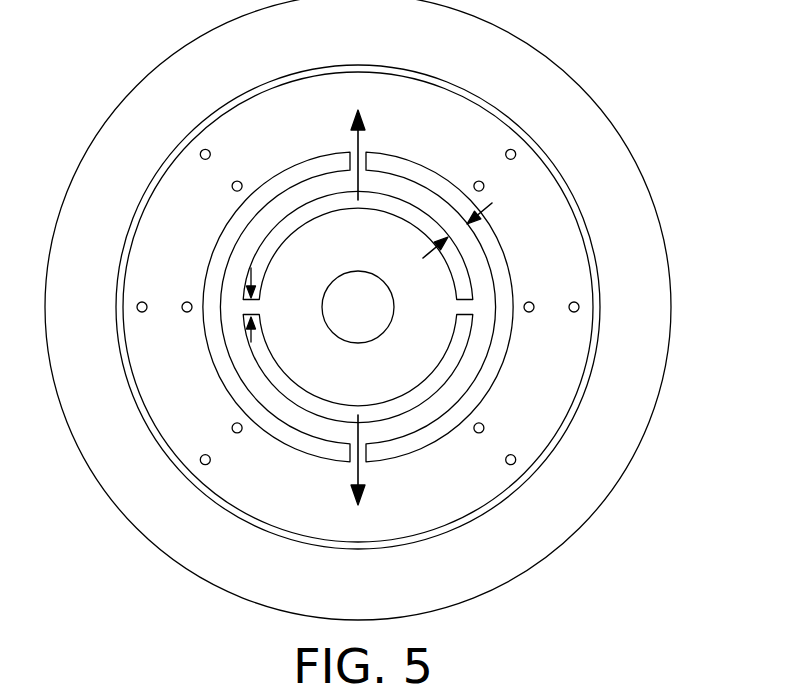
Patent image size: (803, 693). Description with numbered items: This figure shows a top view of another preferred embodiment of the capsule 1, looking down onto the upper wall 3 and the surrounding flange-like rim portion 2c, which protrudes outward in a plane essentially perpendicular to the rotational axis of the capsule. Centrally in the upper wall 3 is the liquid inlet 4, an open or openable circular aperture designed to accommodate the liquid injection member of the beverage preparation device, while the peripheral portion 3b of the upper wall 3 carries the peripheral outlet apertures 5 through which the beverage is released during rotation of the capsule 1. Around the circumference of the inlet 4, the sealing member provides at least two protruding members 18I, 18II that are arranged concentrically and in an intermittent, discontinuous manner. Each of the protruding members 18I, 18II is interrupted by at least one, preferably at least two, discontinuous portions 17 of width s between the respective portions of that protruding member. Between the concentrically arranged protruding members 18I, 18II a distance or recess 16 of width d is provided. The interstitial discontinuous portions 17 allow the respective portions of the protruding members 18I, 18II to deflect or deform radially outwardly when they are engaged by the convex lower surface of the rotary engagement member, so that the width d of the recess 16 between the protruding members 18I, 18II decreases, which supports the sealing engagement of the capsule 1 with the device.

The capsule 1 is at (92, 123).
The flange-like rim portion 2c is at (613, 160).
The upper wall 3 is at (583, 327).
The peripheral portion 3b is at (547, 400).
The central liquid inlet 4 is at (363, 328).
The peripheral outlet apertures 5 is at (136, 308).
The recess 16 is at (372, 332).
The discontinuous portions 17 is at (363, 318).
The protruding member 18I is at (326, 380).
The protruding member 18II is at (276, 332).
The width d is at (453, 230).
The width s is at (257, 310).